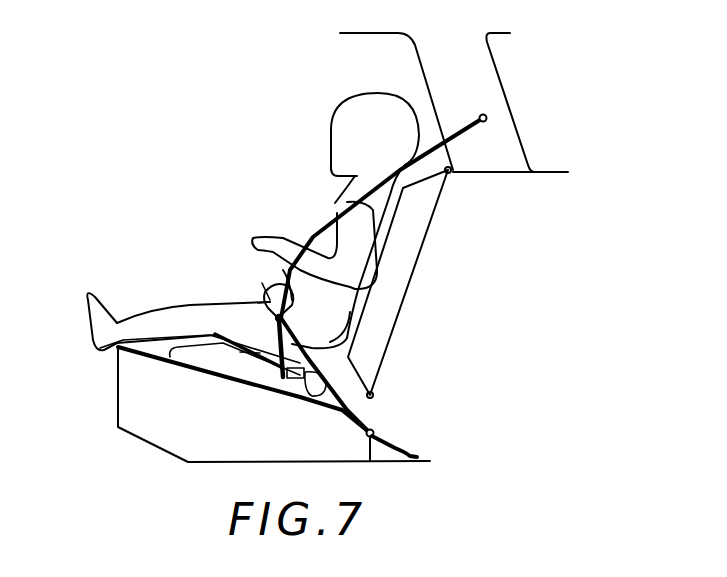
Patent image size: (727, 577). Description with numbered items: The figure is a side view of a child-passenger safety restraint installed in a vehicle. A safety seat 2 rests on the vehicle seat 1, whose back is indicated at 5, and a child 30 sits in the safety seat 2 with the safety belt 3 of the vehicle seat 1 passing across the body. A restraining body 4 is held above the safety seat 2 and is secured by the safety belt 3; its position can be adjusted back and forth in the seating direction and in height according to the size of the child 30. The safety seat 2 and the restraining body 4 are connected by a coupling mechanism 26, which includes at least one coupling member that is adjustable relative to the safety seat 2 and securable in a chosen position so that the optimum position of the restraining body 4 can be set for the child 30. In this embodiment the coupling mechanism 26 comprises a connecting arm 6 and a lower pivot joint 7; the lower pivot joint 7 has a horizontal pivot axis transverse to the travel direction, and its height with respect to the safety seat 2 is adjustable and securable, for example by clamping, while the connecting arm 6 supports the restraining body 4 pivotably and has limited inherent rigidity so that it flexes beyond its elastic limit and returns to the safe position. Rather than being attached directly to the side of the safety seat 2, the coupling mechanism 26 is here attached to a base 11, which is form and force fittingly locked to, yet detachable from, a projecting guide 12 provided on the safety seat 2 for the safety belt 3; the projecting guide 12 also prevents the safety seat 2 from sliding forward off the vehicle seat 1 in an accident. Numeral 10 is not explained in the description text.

The vehicle seat 1 is at (150, 417).
The safety seat 2 is at (227, 362).
The safety belt 3 is at (433, 145).
The restraining body 4 is at (270, 302).
The back of the vehicle seat 5 is at (418, 242).
The connecting arm 6 is at (253, 353).
The lower pivot joint 7 is at (273, 373).
The hand grip portion 10 is at (258, 303).
The base 11 is at (289, 382).
The projecting guide 12 is at (311, 397).
The coupling mechanism 26 is at (297, 340).
The child 30 is at (353, 277).